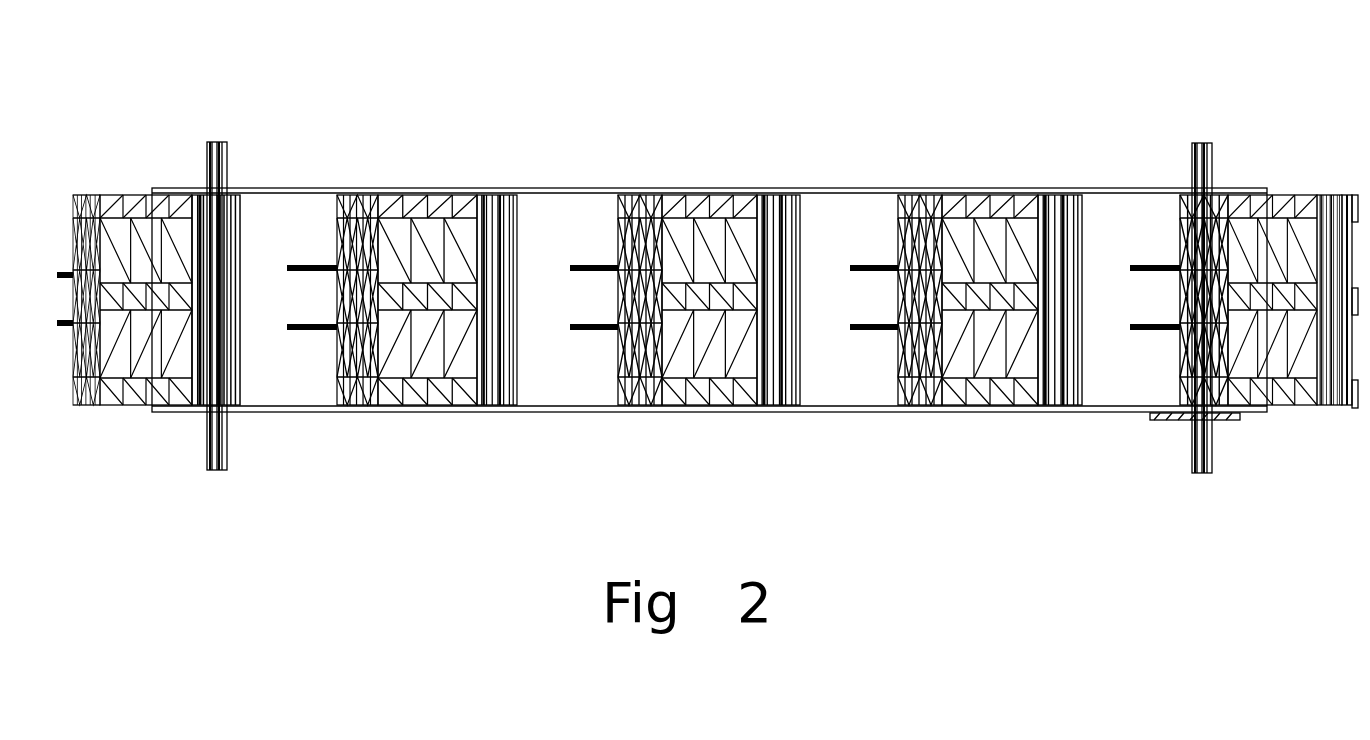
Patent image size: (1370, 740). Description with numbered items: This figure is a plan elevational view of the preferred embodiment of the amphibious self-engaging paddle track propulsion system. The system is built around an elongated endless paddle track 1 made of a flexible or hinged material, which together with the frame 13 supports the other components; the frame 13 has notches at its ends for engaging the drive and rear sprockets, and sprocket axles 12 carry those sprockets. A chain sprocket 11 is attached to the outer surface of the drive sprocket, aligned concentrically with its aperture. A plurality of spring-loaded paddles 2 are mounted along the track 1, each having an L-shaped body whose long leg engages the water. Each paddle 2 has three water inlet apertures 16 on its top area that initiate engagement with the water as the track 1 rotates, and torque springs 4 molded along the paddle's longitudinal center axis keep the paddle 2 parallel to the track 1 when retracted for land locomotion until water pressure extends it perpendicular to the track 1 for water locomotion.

The paddle track 1 is at (852, 360).
The spring-loaded paddle 2 is at (632, 362).
The torque spring 4 is at (568, 315).
The chain sprocket 11 is at (1158, 420).
The sprocket axle 12 is at (227, 138).
The frame 13 is at (848, 187).
The water inlet aperture 16 is at (385, 395).